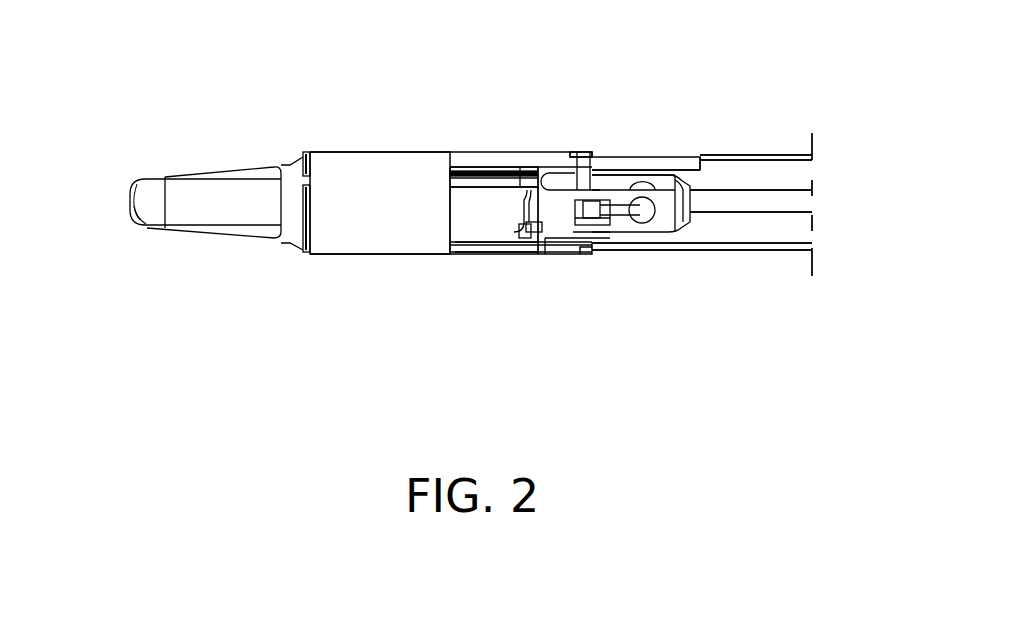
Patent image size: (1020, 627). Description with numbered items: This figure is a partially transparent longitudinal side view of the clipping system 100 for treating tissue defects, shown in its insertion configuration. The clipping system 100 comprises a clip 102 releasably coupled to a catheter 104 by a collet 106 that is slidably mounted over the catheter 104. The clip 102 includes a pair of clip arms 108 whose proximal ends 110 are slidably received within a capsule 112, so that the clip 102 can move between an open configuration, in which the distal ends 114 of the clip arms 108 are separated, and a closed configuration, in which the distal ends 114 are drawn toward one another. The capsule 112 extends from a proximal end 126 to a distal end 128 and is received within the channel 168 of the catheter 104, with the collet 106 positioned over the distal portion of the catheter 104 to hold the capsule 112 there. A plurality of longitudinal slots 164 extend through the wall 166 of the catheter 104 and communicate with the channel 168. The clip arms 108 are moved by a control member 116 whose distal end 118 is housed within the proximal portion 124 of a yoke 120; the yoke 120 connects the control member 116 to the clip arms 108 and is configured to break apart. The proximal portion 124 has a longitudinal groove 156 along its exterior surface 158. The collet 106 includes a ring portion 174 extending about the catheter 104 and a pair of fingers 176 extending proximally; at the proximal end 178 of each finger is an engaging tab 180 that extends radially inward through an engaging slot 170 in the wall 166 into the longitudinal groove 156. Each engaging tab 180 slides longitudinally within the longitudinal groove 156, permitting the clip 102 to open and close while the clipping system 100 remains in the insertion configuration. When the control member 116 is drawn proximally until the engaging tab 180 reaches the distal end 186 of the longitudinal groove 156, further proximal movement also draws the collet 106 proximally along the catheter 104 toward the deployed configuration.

The clipping system 100 is at (468, 62).
The clip 102 is at (236, 118).
The catheter 104 is at (758, 118).
The collet 106 is at (373, 152).
The clip arms 108 is at (205, 170).
The proximal ends 110 is at (537, 203).
The capsule 112 is at (470, 222).
The distal ends 114 is at (145, 222).
The control member 116 is at (790, 202).
The distal end 118 is at (592, 208).
The yoke 120 is at (603, 178).
The proximal portion 124 is at (667, 218).
The proximal end 126 is at (511, 232).
The distal end 128 is at (293, 222).
The longitudinal groove 156 is at (622, 178).
The exterior surface 158 is at (620, 218).
The longitudinal slots 164 is at (498, 183).
The wall 166 is at (772, 250).
The channel 168 is at (787, 177).
The engaging slot 170 is at (677, 175).
The ring portion 174 is at (323, 162).
The fingers 176 is at (470, 166).
The proximal end 178 is at (582, 152).
The engaging tab 180 is at (566, 177).
The distal end 186 is at (548, 178).